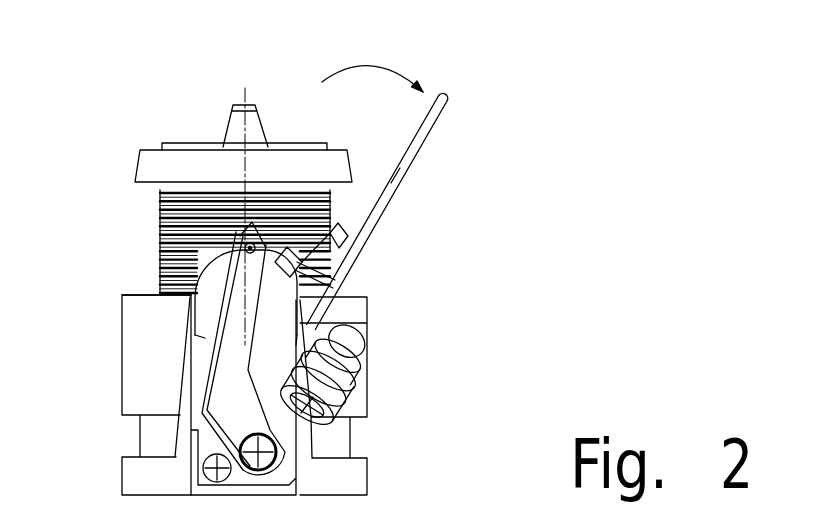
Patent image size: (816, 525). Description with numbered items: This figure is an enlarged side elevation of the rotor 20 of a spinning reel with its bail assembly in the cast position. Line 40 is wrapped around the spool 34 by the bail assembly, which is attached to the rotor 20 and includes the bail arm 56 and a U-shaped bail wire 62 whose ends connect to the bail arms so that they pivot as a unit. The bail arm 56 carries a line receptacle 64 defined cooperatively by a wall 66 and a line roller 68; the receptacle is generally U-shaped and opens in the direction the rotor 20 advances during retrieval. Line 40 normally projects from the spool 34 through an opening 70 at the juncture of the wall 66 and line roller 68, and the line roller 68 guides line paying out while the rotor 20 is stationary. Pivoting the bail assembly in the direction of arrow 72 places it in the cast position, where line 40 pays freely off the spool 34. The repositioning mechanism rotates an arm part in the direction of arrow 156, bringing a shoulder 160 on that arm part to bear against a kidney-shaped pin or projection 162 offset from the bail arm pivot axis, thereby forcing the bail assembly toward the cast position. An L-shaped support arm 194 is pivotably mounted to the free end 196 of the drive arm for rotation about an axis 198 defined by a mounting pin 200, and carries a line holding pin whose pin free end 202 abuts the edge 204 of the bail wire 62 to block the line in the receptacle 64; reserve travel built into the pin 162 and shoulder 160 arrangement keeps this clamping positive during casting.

The rotor 20 is at (138, 447).
The spool 34 is at (158, 293).
The line 40 is at (160, 245).
The bail arm 56 is at (207, 293).
The bail wire 62 is at (446, 92).
The line receptacle 64 is at (357, 357).
The wall 66 is at (341, 419).
The line roller 68 is at (335, 385).
The opening 70 is at (345, 337).
The arrow 72 is at (380, 65).
The arrow 156 is at (190, 352).
The shoulder 160 is at (238, 242).
The kidney-shaped pin/projection 162 is at (303, 305).
The L-shaped support arm 194 is at (335, 252).
The free end 196 is at (252, 240).
The axis 198 is at (294, 215).
The mounting pin 200 is at (346, 225).
The pin free end 202 is at (342, 285).
The edge 204 is at (388, 175).